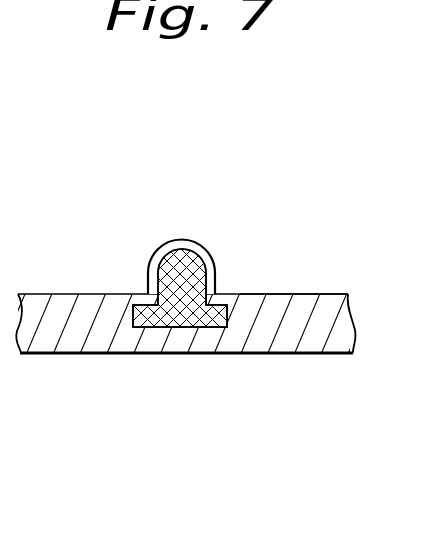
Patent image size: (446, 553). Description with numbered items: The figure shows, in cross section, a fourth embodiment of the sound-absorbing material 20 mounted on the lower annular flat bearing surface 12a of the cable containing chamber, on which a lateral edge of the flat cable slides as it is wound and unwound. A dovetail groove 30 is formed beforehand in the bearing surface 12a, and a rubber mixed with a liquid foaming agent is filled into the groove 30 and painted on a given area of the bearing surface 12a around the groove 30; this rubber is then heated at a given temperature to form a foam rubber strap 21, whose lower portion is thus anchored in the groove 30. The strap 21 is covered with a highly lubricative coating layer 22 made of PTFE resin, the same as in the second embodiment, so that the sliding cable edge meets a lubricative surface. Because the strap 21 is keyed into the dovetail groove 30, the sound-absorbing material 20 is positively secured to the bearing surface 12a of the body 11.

The substrate 11 is at (278, 340).
The lower annular flat bearing surface 12a is at (284, 294).
The sound-absorbing material 20 is at (197, 258).
The strap 21 is at (190, 262).
The highly lubricative coating layer 22 is at (161, 251).
The dovetail groove 30 is at (150, 316).